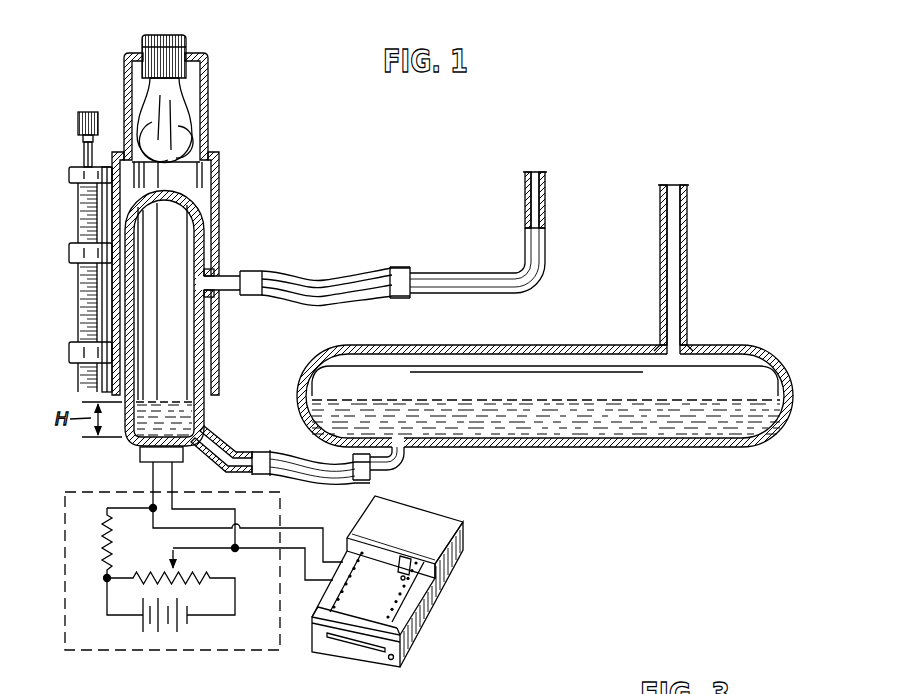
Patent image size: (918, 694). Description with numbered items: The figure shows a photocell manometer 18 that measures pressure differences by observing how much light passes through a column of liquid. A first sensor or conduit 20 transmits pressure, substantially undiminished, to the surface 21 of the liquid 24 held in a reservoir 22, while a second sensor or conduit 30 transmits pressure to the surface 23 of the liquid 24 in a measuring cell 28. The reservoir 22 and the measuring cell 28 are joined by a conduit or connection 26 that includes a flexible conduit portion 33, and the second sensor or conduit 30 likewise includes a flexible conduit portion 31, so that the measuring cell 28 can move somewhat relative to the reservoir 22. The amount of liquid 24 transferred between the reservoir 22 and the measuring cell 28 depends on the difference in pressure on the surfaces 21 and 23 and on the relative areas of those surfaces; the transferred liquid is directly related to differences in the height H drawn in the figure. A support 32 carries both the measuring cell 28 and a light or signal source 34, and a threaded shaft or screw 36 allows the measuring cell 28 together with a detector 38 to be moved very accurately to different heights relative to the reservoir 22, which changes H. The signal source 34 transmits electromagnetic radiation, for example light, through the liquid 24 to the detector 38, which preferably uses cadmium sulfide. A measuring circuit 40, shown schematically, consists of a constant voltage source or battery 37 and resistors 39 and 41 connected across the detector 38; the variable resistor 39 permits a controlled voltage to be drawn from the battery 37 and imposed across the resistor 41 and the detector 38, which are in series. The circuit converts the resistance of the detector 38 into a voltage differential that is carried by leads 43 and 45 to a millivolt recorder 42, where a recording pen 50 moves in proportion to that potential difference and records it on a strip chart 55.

The photocell manometer 18 is at (505, 134).
The first sensor or conduit 20 is at (684, 257).
The surface 21 is at (583, 378).
The reservoir 22 is at (548, 344).
The surface 23 is at (170, 398).
The liquid 24 is at (147, 415).
The conduit or connection 26 is at (412, 459).
The measuring cell 28 is at (188, 332).
The second sensor or conduit 30 is at (436, 269).
The flexible conduit portion 31 is at (331, 277).
The support 32 is at (221, 183).
The flexible conduit portion 33 is at (285, 455).
The light or signal source 34 is at (176, 117).
The threaded shaft or screw 36 is at (80, 280).
The constant voltage source or battery 37 is at (177, 635).
The detector 38 is at (142, 453).
The variable resistor 39 is at (199, 573).
The measuring circuit 40 is at (138, 652).
The resistor 41 is at (104, 548).
The millivolt recorder 42 is at (472, 522).
The lead 43 is at (307, 580).
The lead 45 is at (323, 540).
The recording pen 50 is at (416, 571).
The strip chart 55 is at (378, 600).